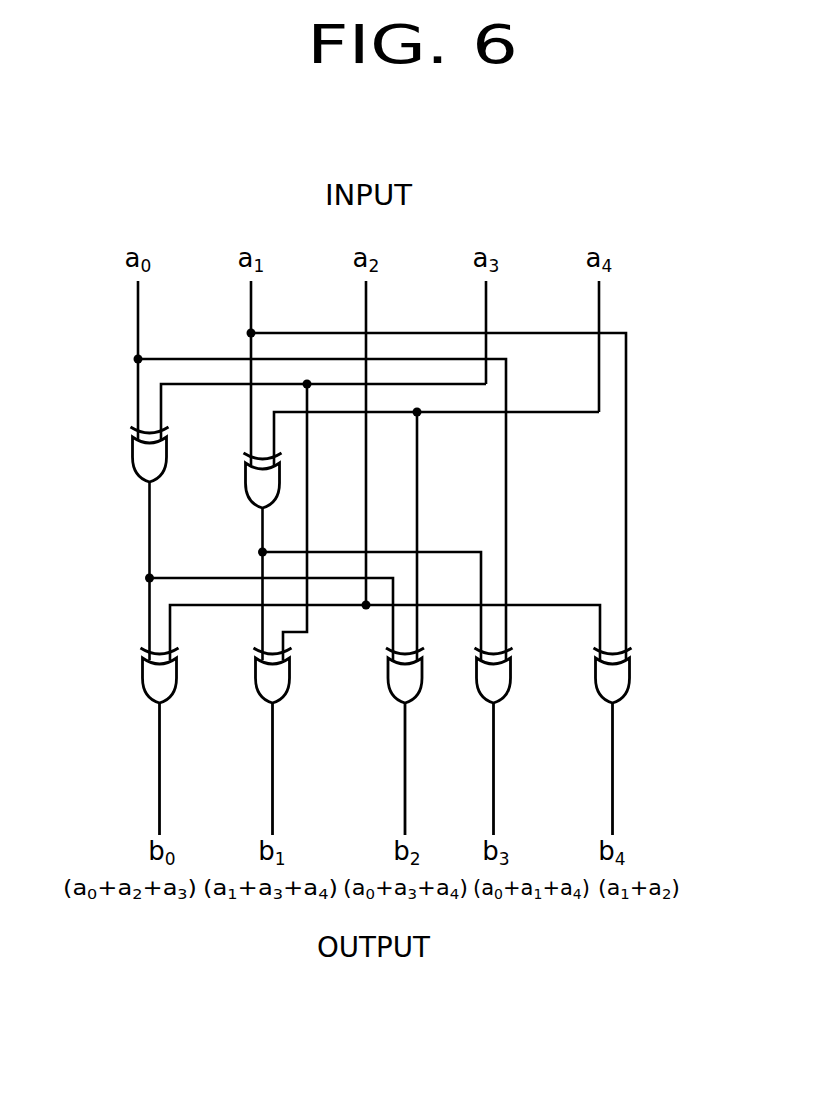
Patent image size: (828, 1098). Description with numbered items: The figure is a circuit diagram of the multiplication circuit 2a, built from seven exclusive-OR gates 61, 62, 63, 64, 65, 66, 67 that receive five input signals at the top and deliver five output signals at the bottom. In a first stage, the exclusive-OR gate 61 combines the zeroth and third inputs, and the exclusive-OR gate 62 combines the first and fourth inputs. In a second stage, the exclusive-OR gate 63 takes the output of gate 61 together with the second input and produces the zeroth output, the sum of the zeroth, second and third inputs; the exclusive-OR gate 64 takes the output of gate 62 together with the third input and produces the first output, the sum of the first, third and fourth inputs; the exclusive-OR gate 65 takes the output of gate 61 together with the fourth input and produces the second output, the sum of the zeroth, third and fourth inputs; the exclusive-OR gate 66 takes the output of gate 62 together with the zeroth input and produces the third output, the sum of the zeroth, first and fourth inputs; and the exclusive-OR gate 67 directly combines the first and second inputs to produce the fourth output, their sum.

The multiplication circuit 2a is at (633, 480).
The exclusive-OR gate 61 is at (145, 463).
The exclusive-OR gate 62 is at (257, 489).
The exclusive-OR gate 63 is at (152, 690).
The exclusive-OR gate 64 is at (263, 690).
The exclusive-OR gate 65 is at (390, 690).
The exclusive-OR gate 66 is at (488, 692).
The exclusive-OR gate 67 is at (607, 692).